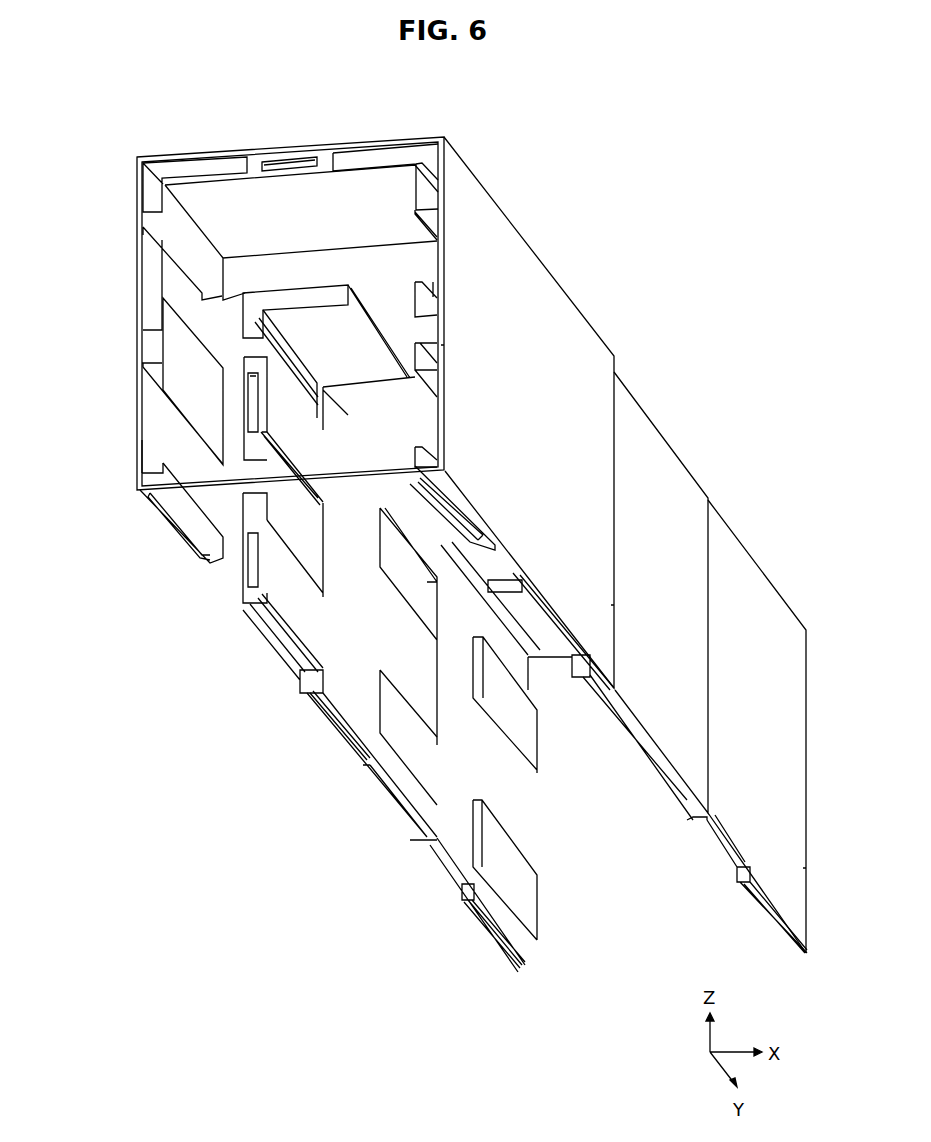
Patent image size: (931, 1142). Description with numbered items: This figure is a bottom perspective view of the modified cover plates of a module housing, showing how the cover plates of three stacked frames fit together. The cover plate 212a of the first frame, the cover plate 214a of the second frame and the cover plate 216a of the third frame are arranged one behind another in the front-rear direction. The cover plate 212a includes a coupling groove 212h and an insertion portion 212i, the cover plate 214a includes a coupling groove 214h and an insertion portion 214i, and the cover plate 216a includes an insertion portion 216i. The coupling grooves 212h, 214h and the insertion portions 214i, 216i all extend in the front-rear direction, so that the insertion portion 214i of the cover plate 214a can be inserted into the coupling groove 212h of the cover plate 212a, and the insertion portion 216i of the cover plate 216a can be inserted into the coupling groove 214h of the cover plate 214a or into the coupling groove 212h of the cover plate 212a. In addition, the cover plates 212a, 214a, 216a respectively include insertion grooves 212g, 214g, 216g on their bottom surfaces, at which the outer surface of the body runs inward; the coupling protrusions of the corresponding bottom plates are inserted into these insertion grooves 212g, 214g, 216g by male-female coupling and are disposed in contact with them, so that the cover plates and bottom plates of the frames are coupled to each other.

The cover plate of the first frame 212a is at (521, 243).
The insertion groove 212g is at (181, 527).
The coupling groove 212h is at (186, 156).
The insertion portion 212i is at (182, 327).
The cover plate of the second frame 214a is at (650, 433).
The insertion groove 214g is at (313, 703).
The coupling groove 214h is at (253, 415).
The insertion portion 214i is at (288, 298).
The cover plate of the third frame 216a is at (752, 577).
The insertion groove 216g is at (487, 932).
The insertion portion 216i is at (538, 892).